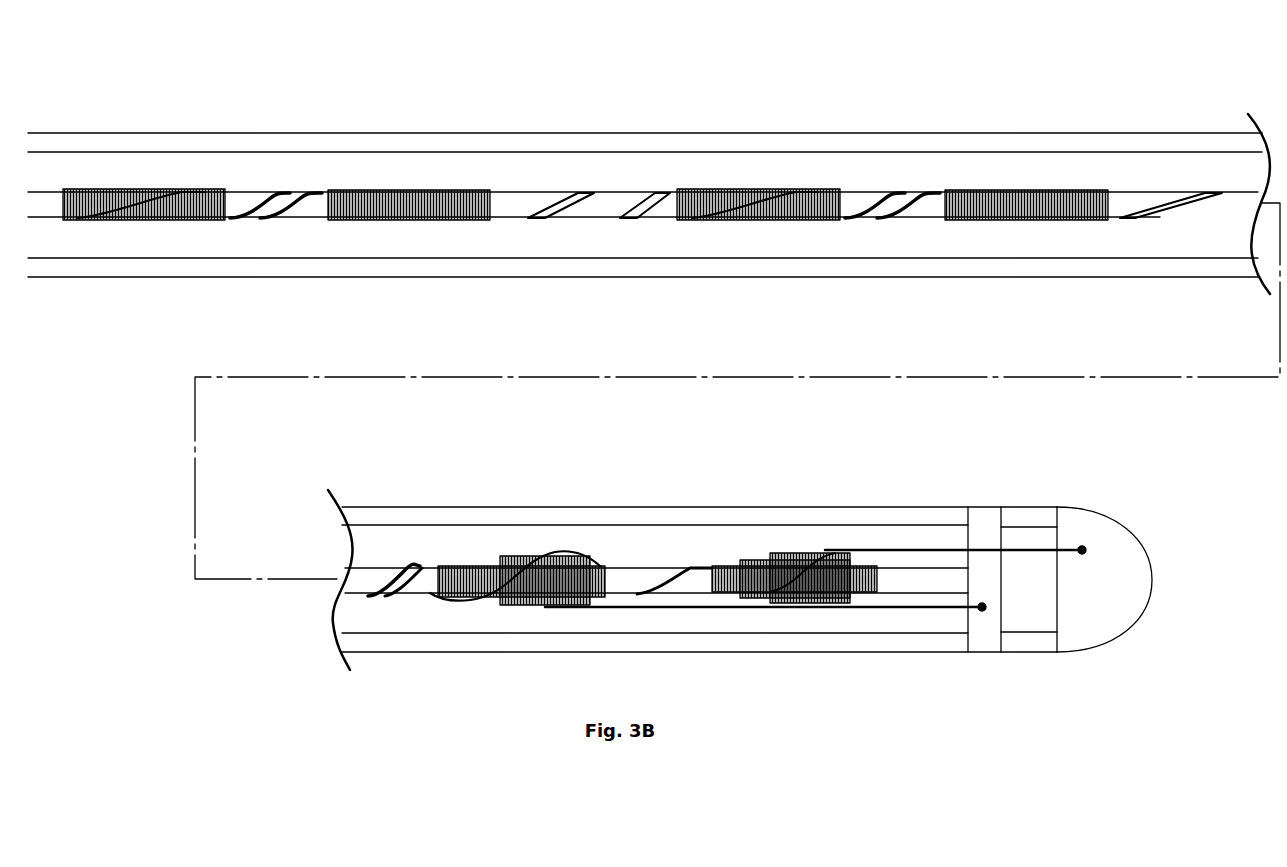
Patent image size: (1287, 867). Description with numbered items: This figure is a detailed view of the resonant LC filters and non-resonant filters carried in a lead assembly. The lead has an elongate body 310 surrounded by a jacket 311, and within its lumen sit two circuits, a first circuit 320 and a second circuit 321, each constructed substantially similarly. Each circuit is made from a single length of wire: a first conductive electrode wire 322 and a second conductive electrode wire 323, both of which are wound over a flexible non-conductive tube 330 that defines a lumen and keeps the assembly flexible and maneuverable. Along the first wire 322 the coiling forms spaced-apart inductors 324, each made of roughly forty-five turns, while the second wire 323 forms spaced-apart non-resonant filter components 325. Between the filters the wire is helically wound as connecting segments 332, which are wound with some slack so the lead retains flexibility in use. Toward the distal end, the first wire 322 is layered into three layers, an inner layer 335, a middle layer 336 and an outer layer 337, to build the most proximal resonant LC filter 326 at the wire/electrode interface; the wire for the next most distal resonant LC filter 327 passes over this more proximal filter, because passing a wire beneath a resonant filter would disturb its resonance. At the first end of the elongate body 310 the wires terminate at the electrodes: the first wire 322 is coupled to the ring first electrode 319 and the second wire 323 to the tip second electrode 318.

The elongate body 310 is at (810, 132).
The jacket 311 is at (288, 278).
The second electrode 318 is at (1128, 559).
The first electrode 319 is at (985, 520).
The first circuit 320 is at (575, 172).
The second circuit 321 is at (660, 236).
The first conductive electrode wire 322 is at (264, 192).
The second conductive electrode wire 323 is at (300, 192).
The inductor 324 is at (117, 188).
The filter component 325 is at (377, 191).
The resonant LC filter 326 is at (570, 522).
The next most distal resonant LC filter 327 is at (825, 533).
The non-conductive tube 330 is at (543, 191).
The connecting segment 332 is at (569, 232).
The inner layer 335 is at (473, 562).
The middle layer 336 is at (488, 564).
The outer layer 337 is at (515, 557).